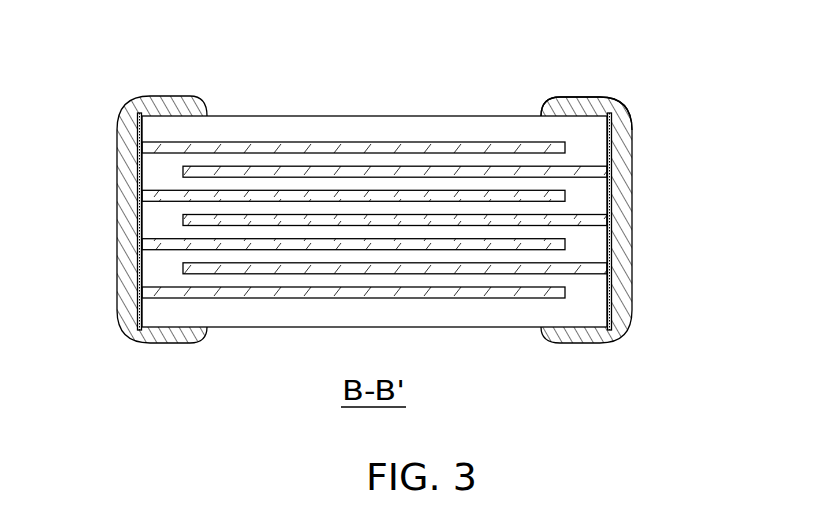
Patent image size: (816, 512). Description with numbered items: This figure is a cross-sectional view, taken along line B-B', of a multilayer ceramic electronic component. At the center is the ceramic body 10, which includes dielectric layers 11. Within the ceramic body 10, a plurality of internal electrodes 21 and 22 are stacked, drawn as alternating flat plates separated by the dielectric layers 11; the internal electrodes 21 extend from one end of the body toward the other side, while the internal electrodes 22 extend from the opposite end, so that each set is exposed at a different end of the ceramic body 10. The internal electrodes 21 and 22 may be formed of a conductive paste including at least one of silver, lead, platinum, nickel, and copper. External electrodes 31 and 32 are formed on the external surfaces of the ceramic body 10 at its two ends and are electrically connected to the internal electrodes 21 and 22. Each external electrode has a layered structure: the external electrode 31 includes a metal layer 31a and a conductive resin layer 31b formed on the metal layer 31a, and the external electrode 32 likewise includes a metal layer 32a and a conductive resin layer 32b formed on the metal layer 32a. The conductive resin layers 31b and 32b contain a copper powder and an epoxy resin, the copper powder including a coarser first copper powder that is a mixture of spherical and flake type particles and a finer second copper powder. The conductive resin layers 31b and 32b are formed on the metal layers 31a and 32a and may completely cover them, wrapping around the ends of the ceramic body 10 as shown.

The ceramic body 10 is at (377, 116).
The dielectric layer 11 is at (567, 128).
The internal electrode 21 is at (460, 147).
The internal electrode 22 is at (523, 172).
The external electrode 31 is at (112, 257).
The metal layer 31a is at (123, 287).
The conductive resin layer 31b is at (127, 253).
The external electrode 32 is at (628, 266).
The metal layer 32a is at (625, 323).
The conductive resin layer 32b is at (613, 255).